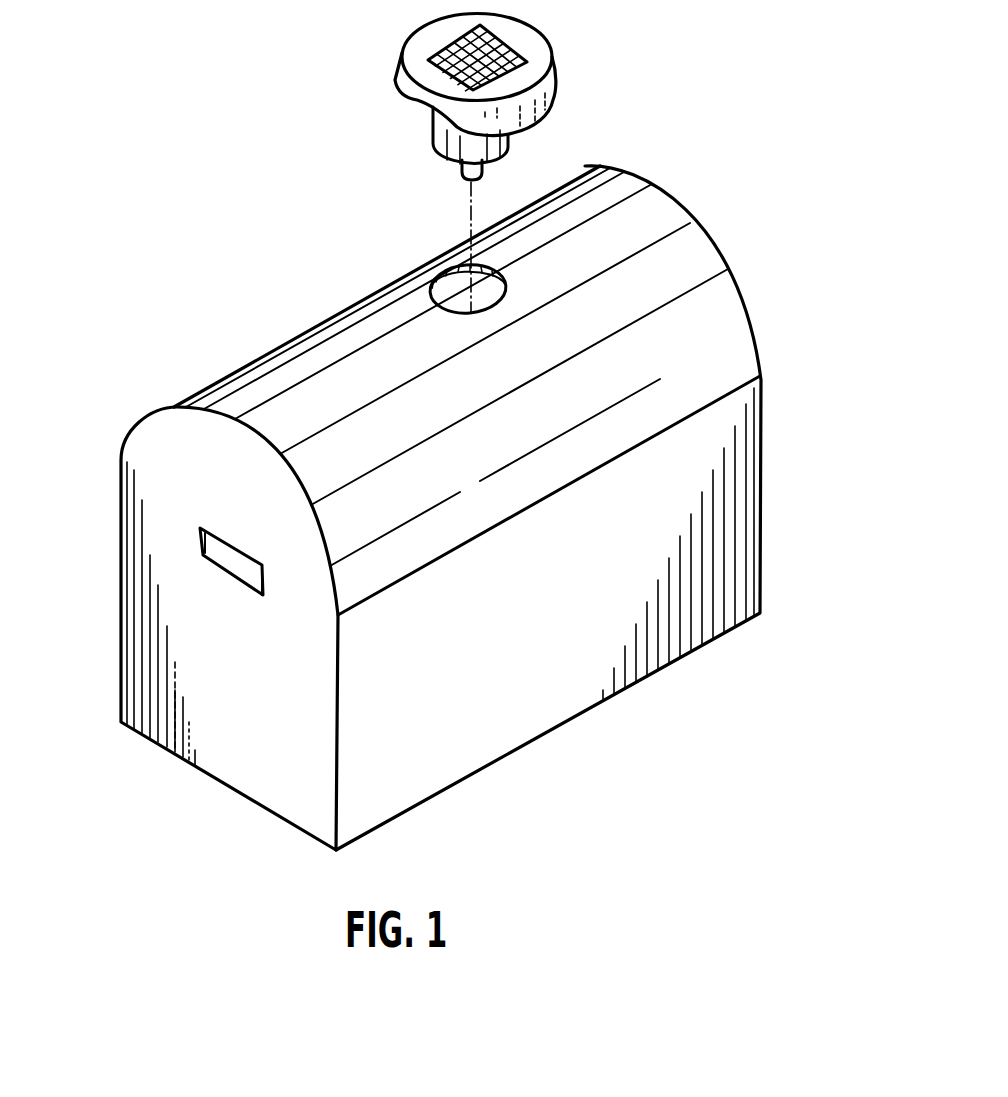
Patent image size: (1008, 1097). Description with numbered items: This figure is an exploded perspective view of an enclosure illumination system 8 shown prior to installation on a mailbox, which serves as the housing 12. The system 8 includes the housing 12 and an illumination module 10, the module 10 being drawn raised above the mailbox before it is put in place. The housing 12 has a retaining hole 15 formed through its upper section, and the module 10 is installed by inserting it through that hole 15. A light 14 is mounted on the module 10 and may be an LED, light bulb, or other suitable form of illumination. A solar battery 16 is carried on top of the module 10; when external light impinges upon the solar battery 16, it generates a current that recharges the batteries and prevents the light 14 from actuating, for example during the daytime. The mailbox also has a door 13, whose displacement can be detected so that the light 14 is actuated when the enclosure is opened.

The enclosure illumination system 8 is at (250, 226).
The illumination module 10 is at (557, 77).
The housing 12 is at (728, 327).
The door 13 is at (182, 617).
The light 14 is at (460, 172).
The hole 15 is at (505, 279).
The solar battery 16 is at (435, 52).